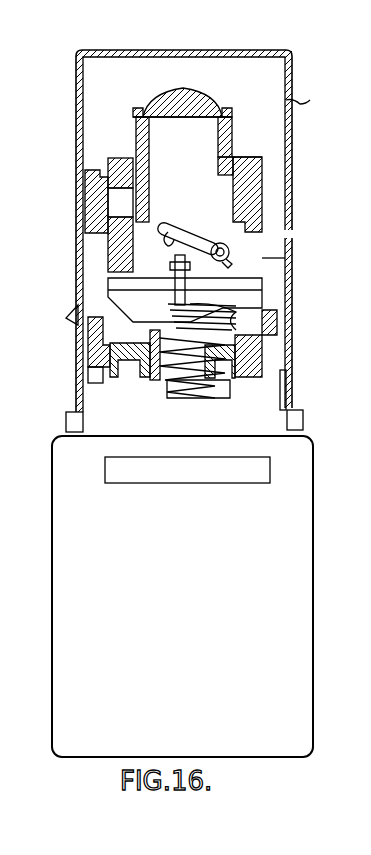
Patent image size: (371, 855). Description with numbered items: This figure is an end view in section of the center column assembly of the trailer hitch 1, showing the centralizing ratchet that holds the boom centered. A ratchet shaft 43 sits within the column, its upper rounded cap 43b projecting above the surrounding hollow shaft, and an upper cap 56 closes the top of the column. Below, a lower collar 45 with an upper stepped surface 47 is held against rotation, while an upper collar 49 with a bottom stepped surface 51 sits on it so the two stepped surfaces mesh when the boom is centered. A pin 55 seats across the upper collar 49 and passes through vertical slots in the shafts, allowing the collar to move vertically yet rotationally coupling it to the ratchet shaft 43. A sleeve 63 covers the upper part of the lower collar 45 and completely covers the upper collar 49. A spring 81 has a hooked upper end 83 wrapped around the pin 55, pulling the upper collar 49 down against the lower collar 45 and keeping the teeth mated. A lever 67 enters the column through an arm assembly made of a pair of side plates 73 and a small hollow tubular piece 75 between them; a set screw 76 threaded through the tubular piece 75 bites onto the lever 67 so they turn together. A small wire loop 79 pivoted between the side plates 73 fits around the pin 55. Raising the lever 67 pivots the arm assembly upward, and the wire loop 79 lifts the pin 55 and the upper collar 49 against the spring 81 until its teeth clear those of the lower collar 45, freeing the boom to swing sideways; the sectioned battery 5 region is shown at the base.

The battery housing 1 is at (156, 543).
The battery 5 is at (5, 274).
The ratchet shaft 43 is at (243, 104).
The upper rounded cap 43b is at (190, 101).
The collar 45 is at (277, 383).
The upper stepped surface 47 is at (233, 398).
The collar 49 is at (105, 322).
The bottom stepped surface 51 is at (118, 335).
The pin 55 is at (262, 296).
The upper cap 56 is at (310, 100).
The sleeve 63 is at (293, 232).
The lever 67 is at (66, 318).
The side plates 73 is at (172, 228).
The hollow tubular piece 75 is at (217, 245).
The set screw 76 is at (292, 258).
The wire loop 79 is at (172, 263).
The spring 81 is at (262, 350).
The hooked upper end 83 is at (262, 286).